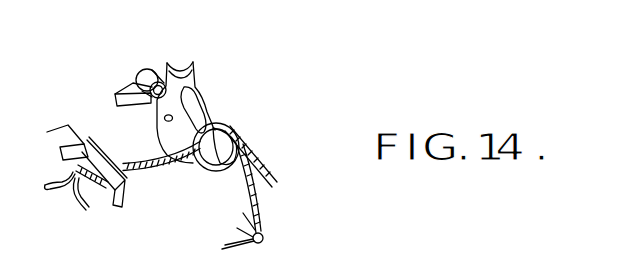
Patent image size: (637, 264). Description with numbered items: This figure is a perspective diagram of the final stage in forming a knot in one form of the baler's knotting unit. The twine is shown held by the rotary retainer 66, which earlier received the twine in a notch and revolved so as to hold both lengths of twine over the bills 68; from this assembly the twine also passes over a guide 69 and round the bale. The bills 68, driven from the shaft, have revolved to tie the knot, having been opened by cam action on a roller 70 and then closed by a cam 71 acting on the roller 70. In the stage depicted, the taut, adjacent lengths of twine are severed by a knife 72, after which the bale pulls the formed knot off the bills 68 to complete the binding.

The rotary retainer 66 is at (73, 190).
The bills 68 is at (203, 120).
The guide 69 is at (263, 237).
The roller 70 is at (141, 69).
The cam 71 is at (115, 94).
The knife 72 is at (125, 197).